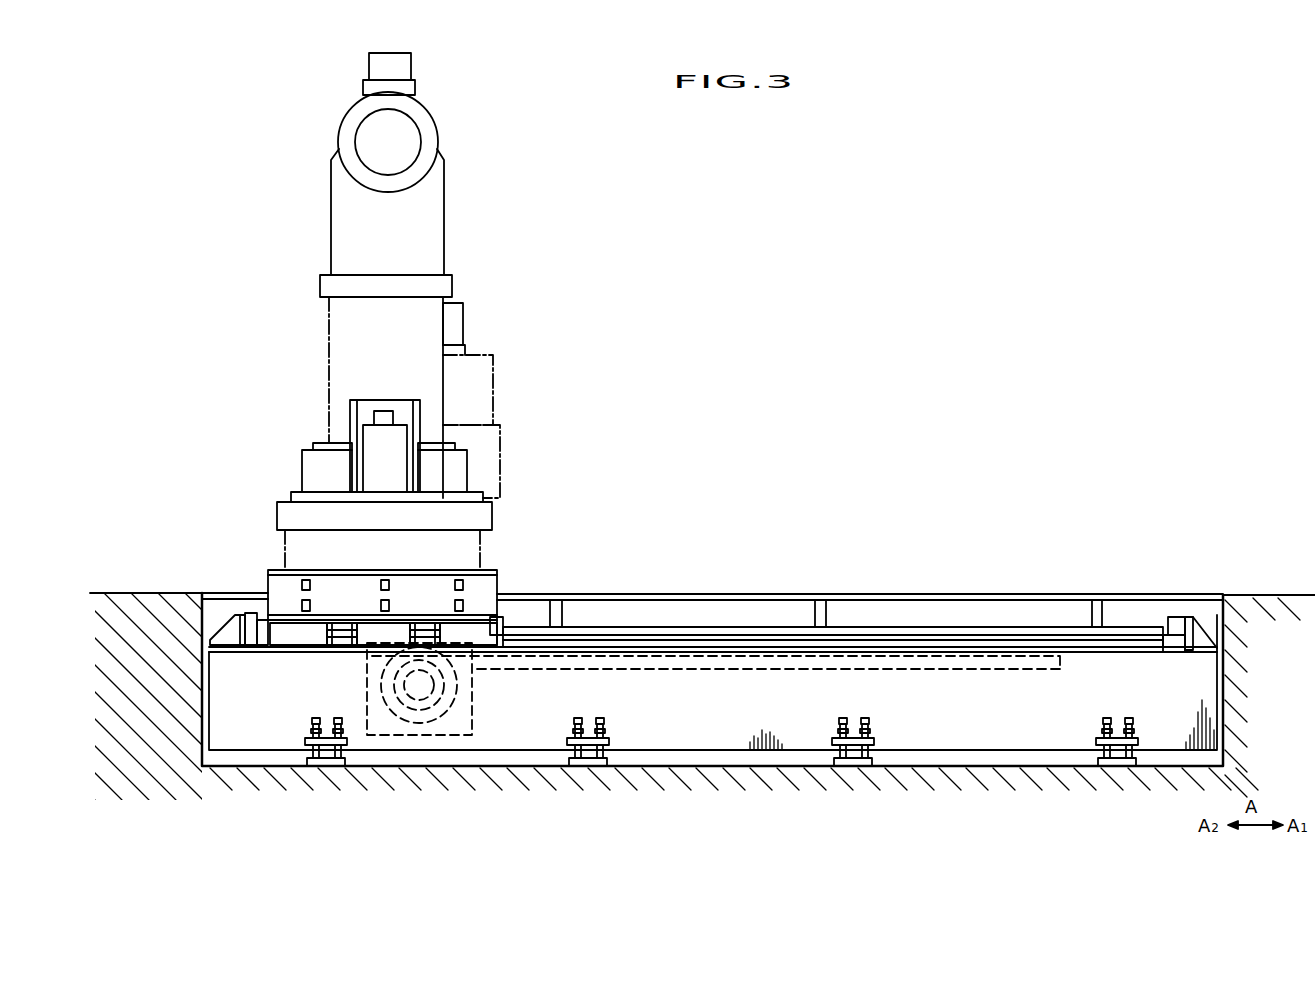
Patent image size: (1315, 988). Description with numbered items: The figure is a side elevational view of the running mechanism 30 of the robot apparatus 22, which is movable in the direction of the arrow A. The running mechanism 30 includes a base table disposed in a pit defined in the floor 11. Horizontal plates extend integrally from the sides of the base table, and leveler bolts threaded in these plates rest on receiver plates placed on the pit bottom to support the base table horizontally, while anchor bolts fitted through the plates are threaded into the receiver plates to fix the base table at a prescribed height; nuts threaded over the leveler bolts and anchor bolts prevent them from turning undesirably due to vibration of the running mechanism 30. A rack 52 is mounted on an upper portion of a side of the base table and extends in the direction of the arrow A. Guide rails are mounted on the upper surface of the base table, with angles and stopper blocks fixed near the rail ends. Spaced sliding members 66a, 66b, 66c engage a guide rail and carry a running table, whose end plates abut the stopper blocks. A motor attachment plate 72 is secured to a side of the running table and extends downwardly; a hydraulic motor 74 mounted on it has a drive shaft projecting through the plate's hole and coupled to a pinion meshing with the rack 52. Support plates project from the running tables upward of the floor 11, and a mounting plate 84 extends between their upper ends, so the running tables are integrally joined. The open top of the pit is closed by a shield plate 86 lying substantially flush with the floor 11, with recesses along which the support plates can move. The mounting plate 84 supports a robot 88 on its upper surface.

The floor 11 is at (1283, 595).
The robot apparatus 22 is at (705, 390).
The running mechanism 30 is at (1063, 497).
The rack 52 is at (712, 663).
The sliding member 66a is at (288, 650).
The sliding member 66b is at (343, 632).
The sliding member 66c is at (480, 628).
The motor attachment plate 72 is at (457, 718).
The hydraulic motor 74 is at (428, 708).
The mounting plate 84 is at (280, 572).
The shield plate 86 is at (783, 593).
The robot 88 is at (470, 332).